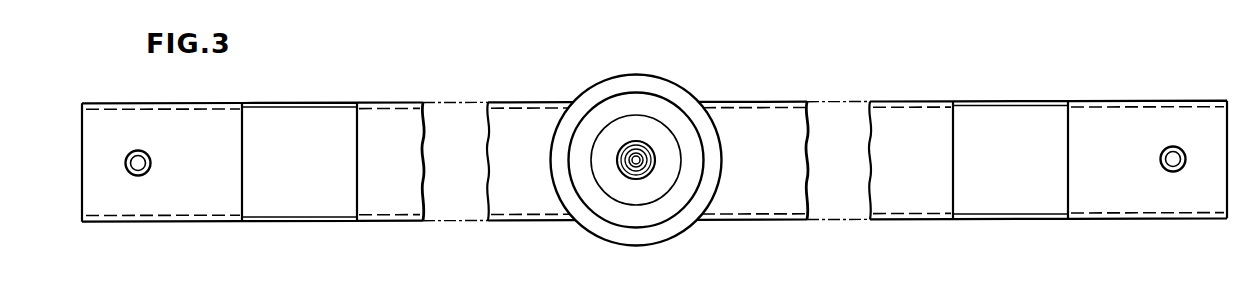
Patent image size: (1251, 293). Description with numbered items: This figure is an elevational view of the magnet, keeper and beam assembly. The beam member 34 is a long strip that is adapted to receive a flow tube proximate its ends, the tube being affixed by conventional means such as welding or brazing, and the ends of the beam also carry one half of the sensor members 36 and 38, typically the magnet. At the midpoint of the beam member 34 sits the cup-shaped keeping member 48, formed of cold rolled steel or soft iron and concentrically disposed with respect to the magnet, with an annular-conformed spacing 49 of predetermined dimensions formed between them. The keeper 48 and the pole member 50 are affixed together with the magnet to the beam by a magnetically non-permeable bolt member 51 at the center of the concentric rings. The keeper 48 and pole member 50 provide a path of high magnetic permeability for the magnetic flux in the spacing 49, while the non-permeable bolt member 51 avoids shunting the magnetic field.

The beam member 34 is at (905, 205).
The sensor member 36 is at (152, 163).
The sensor member 38 is at (1160, 159).
The cup-shaped keeping member 48 is at (662, 88).
The annular-conformed spacing 49 is at (605, 115).
The pole member 50 is at (673, 148).
The magnetically non-permeable bolt member 51 is at (628, 160).